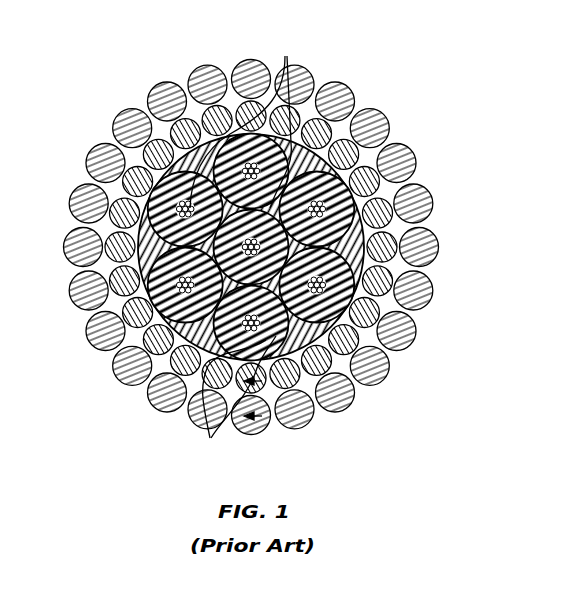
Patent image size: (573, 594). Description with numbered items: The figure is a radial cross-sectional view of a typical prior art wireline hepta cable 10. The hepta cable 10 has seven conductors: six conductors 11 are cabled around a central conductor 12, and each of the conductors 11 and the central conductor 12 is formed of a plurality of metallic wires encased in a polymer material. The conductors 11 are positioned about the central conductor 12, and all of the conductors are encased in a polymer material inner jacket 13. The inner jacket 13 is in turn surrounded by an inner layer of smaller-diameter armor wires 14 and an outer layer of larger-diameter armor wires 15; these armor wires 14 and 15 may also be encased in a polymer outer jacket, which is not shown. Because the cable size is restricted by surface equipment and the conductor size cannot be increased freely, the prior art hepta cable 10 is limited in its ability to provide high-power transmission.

The hepta cable 10 is at (421, 46).
The conductors 11 is at (244, 253).
The central conductor 12 is at (348, 222).
The inner jacket 13 is at (62, 283).
The smaller-diameter armor wires 14 is at (109, 355).
The larger-diameter armor wires 15 is at (106, 119).